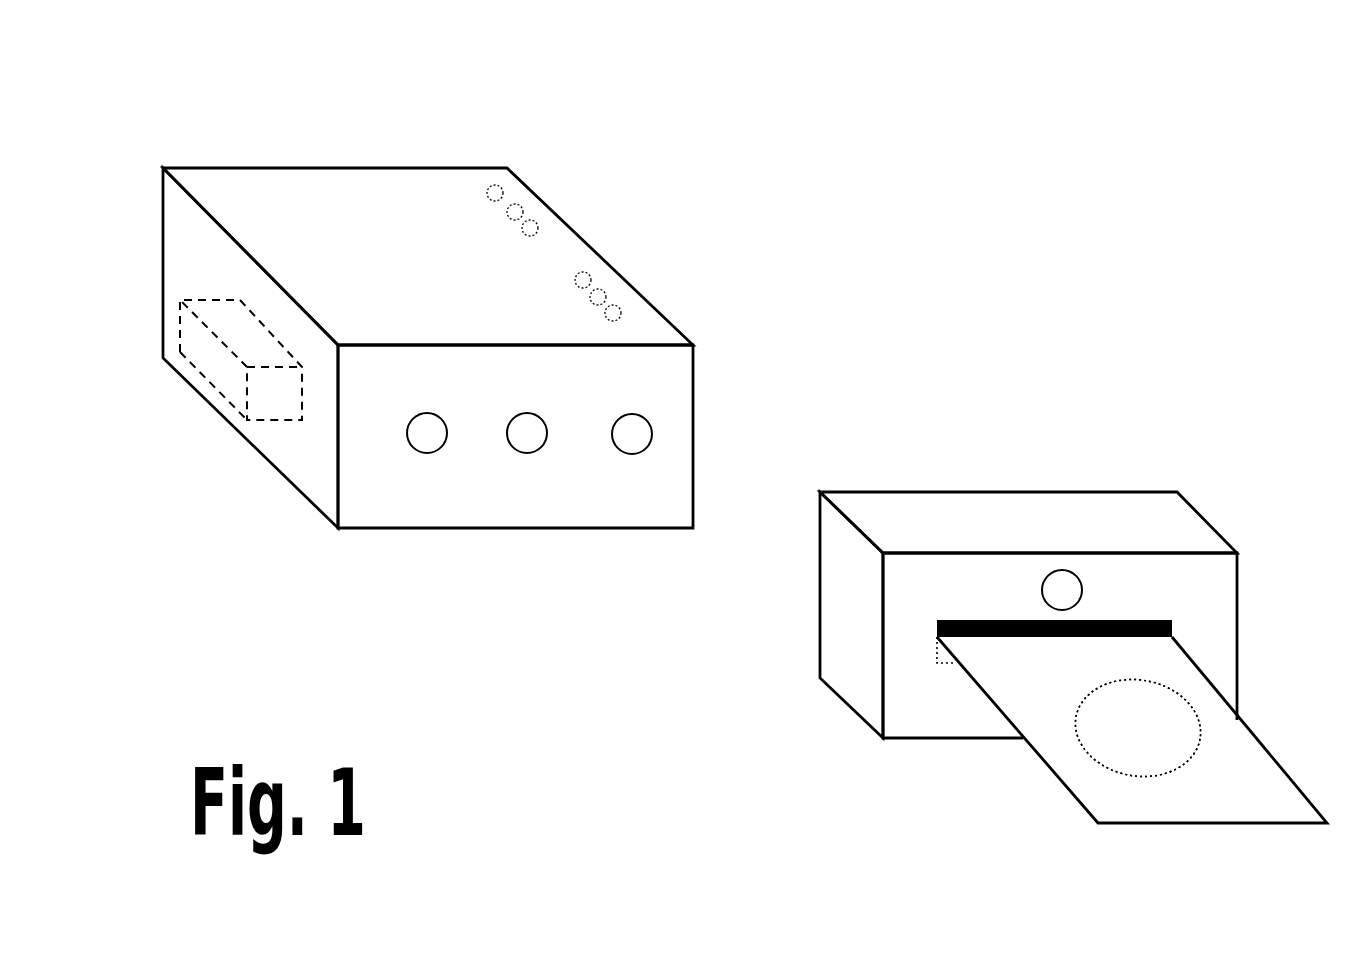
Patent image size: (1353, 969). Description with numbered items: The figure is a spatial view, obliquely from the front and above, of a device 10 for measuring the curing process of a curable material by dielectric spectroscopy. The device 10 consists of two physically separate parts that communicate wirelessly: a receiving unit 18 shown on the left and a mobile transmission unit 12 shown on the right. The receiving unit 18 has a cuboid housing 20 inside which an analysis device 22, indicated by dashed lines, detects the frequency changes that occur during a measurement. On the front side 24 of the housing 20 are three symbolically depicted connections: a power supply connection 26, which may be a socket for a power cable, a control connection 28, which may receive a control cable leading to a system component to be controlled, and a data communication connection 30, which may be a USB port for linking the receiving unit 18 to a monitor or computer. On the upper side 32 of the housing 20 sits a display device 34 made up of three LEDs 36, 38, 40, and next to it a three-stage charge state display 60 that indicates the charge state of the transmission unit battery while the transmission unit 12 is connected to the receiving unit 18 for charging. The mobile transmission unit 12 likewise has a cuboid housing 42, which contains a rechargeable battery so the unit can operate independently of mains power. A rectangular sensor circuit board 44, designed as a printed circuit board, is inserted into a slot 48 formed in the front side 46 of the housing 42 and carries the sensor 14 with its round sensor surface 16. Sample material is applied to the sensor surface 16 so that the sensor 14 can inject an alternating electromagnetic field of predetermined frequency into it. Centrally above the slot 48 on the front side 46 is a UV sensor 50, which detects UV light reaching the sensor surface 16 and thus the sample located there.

The device 10 is at (1000, 217).
The mobile transmission unit 12 is at (1071, 476).
The sensor 14 is at (1093, 753).
The sensor surface 16 is at (1152, 758).
The receiving unit 18 is at (275, 141).
The housing 20 is at (161, 261).
The analysis device 22 is at (212, 372).
The front side 24 is at (670, 382).
The power supply connection 26 is at (635, 445).
The control connection 28 is at (527, 445).
The data communication connection 30 is at (430, 445).
The upper side 32 is at (385, 190).
The display device 34 is at (524, 207).
The LED 36 is at (492, 199).
The LED 38 is at (511, 215).
The LED 40 is at (526, 233).
The housing 42 is at (818, 591).
The sensor circuit board 44 is at (1248, 775).
The front side 46 is at (1213, 617).
The slot 48 is at (937, 655).
The UV sensor 50 is at (1043, 590).
The charge state display 60 is at (620, 296).